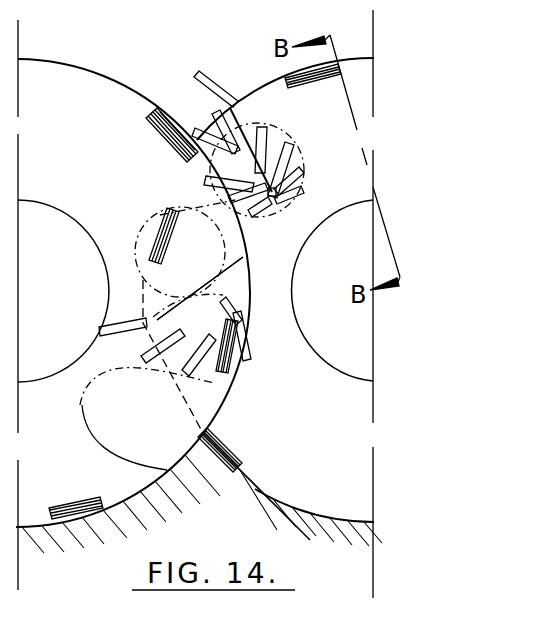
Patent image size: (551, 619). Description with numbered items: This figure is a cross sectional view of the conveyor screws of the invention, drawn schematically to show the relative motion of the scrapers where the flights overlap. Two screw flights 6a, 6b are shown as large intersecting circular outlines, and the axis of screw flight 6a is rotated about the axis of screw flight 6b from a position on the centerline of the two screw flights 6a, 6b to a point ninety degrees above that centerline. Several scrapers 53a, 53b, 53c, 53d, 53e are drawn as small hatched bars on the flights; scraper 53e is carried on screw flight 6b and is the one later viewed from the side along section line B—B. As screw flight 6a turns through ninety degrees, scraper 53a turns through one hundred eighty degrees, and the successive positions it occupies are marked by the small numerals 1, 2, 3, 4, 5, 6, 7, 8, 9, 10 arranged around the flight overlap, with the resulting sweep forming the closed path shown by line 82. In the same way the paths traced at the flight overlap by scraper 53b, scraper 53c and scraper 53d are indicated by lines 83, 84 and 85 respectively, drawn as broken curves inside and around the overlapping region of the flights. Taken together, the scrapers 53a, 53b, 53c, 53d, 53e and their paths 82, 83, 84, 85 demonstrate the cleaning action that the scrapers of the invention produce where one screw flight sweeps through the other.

The screw flight 6a is at (57, 60).
The screw flight 6b is at (267, 84).
The seal position 1 is at (168, 127).
The vane position 2 is at (223, 125).
The vane position 3 is at (261, 139).
The vane position 4 is at (283, 163).
The vane position 5 is at (294, 175).
The vane position 6 is at (294, 191).
The vane position 7 is at (241, 202).
The vane position 8 is at (221, 184).
The vane position 9 is at (209, 132).
The vane position 10 is at (212, 80).
The scraper 53a is at (157, 137).
The scraper 53b is at (168, 240).
The scraper 53c is at (233, 363).
The scraper 53d is at (212, 432).
The scraper 53e is at (317, 87).
The line 82 is at (265, 215).
The line 83 is at (137, 242).
The line 84 is at (240, 290).
The line 85 is at (95, 408).